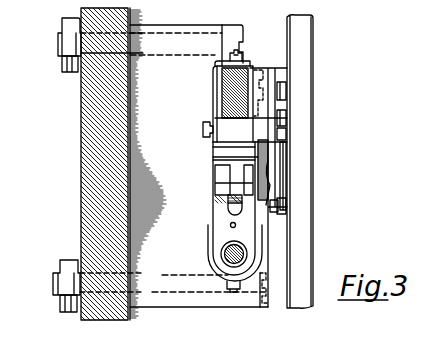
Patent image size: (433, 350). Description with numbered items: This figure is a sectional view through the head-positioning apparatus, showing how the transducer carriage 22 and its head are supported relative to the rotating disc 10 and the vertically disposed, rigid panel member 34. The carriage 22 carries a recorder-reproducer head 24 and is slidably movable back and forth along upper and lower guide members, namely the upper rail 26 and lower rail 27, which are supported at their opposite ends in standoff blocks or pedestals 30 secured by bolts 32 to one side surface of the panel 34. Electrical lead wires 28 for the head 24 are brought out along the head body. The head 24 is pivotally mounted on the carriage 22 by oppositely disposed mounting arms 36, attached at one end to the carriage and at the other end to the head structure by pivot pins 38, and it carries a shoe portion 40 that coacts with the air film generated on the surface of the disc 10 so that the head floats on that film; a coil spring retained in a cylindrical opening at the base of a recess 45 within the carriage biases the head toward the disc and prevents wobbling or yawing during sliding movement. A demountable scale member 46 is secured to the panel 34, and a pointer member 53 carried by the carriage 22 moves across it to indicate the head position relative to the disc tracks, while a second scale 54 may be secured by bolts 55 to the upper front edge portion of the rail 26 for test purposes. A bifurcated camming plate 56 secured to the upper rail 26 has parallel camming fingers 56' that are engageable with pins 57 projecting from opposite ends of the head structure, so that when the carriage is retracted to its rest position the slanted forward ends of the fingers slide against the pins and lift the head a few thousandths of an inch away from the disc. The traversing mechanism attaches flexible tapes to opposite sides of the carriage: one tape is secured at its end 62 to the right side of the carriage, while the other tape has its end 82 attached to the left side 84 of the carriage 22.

The disc 10 is at (313, 278).
The transducer carriage 22 is at (202, 172).
The recorder-reproducer head 24 is at (266, 141).
The upper rail 26 is at (230, 90).
The lower rail 27 is at (218, 260).
The lead wires 28 is at (235, 289).
The pedestal 30 is at (128, 117).
The bolts 32 is at (58, 52).
The panel member 34 is at (90, 175).
The mounting arms 36 is at (257, 181).
The pivot pins 38 is at (270, 170).
The shoe portion 40 is at (282, 182).
The recess 45 is at (79, 347).
The scale member 46 is at (222, 63).
The pointer member 53 is at (245, 62).
The second scale 54 is at (255, 72).
The bolts 55 is at (270, 93).
The camming plate 56 is at (311, 115).
The camming fingers 56' is at (311, 174).
The pins 57 is at (203, 124).
The end of tape 62 is at (235, 193).
The end of tape 82 is at (226, 203).
The left side of carriage 84 is at (225, 155).